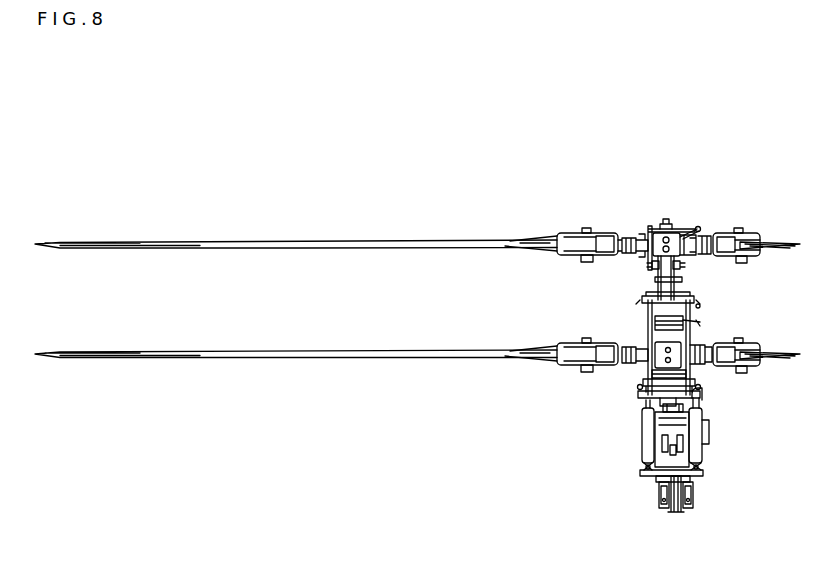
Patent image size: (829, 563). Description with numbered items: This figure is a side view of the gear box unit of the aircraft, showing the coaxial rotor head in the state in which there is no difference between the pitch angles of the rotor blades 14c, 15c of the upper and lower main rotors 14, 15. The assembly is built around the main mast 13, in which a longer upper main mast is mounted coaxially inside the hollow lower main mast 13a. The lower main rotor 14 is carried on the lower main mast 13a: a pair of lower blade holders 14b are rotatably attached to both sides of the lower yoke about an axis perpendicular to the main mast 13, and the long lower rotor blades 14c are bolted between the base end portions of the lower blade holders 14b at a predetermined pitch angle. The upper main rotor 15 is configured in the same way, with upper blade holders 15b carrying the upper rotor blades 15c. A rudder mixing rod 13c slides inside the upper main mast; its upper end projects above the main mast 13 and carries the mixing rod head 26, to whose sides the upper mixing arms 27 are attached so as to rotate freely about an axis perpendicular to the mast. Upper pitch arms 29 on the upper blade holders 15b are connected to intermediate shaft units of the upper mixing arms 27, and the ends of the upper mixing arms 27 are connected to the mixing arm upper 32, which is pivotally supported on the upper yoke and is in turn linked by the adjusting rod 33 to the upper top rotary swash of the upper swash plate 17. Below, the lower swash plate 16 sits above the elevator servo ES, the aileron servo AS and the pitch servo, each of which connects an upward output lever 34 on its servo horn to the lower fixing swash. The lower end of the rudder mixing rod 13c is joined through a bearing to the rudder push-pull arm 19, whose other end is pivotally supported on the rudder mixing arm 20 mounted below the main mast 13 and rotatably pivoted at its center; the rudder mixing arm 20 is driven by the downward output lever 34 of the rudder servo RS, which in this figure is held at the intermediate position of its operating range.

The main mast 13 is at (652, 375).
The lower main mast 13a is at (676, 318).
The rudder mixing rod 13c is at (684, 233).
The lower main rotor 14 is at (740, 337).
The lower blade holder 14b is at (575, 342).
The lower rotor blade 14c is at (440, 346).
The upper main rotor 15 is at (732, 221).
The upper blade holder 15b is at (580, 232).
The upper rotor blade 15c is at (440, 236).
The lower swash plate 16 is at (707, 393).
The upper swash plate 17 is at (702, 299).
The rudder push-pull arm 19 is at (659, 496).
The rudder mixing arm 20 is at (682, 512).
The mixing rod head 26 is at (665, 219).
The upper mixing arm 27 is at (649, 226).
The upper pitch arm 29 is at (626, 237).
The mixing arm upper 32 is at (650, 265).
The adjusting rod 33 is at (682, 265).
The output lever 34 is at (642, 404).
The aileron servo AS is at (655, 432).
The rudder servo RS is at (700, 414).
The elevator servo ES is at (708, 428).